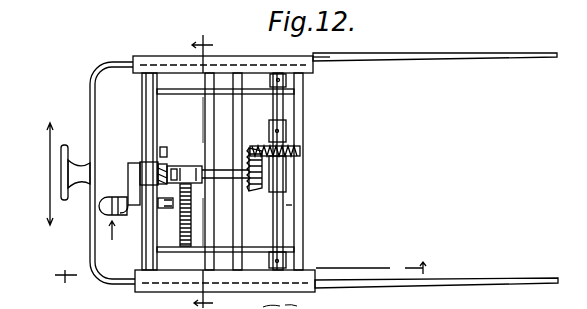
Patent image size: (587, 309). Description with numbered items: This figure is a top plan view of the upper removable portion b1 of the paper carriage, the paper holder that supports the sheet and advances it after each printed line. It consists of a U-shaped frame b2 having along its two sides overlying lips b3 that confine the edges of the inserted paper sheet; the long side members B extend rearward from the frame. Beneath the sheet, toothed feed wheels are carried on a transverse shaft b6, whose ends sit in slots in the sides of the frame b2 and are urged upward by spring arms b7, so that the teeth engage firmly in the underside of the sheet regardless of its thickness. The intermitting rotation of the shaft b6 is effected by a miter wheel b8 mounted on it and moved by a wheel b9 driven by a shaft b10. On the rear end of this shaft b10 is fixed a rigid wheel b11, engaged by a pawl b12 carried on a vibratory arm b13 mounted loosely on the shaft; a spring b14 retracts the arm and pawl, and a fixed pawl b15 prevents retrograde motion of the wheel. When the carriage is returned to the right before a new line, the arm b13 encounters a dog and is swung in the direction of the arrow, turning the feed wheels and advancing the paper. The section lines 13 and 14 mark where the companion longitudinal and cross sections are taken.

The upper removable portion b1 is at (222, 171).
The rigid wheel b11 is at (163, 153).
The U-shaped frame b2 is at (336, 68).
The overlying lips b3 is at (224, 174).
The arm B is at (354, 173).
The transverse shaft b6 is at (286, 211).
The spring arms b7 is at (254, 91).
The miter wheel b8 is at (262, 146).
The wheel b9 is at (249, 156).
The shaft b10 is at (220, 181).
The pawl b12 is at (181, 190).
The vibratory arm b13 is at (131, 195).
The spring b14 is at (184, 212).
The fixed pawl b15 is at (155, 217).
The line 13— 13 is at (241, 272).
The line 14— 14 is at (202, 166).